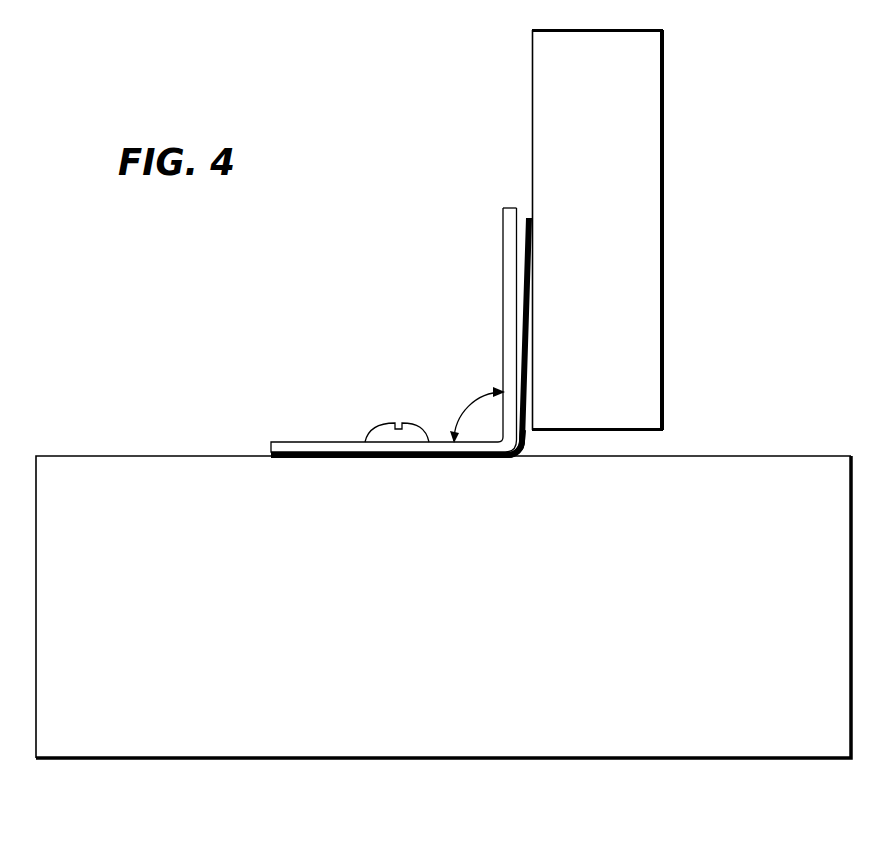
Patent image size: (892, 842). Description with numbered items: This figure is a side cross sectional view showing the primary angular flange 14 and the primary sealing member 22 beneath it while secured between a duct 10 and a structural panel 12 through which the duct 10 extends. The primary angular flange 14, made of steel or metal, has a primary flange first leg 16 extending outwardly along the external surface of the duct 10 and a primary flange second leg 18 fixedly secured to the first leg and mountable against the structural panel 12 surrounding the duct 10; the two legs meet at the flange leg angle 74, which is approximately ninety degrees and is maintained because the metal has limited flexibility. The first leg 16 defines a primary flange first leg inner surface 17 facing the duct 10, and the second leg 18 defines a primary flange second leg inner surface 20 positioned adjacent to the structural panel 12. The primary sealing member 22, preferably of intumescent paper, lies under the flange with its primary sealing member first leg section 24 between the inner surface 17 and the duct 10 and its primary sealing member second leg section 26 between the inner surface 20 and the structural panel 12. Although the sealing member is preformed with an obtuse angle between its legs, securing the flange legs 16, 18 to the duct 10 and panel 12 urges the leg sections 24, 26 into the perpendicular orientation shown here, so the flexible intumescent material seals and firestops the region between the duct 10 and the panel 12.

The duct 10 is at (478, 602).
The structural panel 12 is at (610, 346).
The primary angular flange 14 is at (364, 263).
The primary flange first leg 16 is at (287, 442).
The primary flange first leg inner surface 17 is at (327, 452).
The primary flange second leg 18 is at (507, 317).
The primary flange second leg inner surface 20 is at (526, 218).
The primary sealing member 22 is at (527, 434).
The primary sealing member first leg section 24 is at (385, 457).
The primary sealing member second leg section 26 is at (531, 308).
The flange leg angle 74 is at (465, 410).